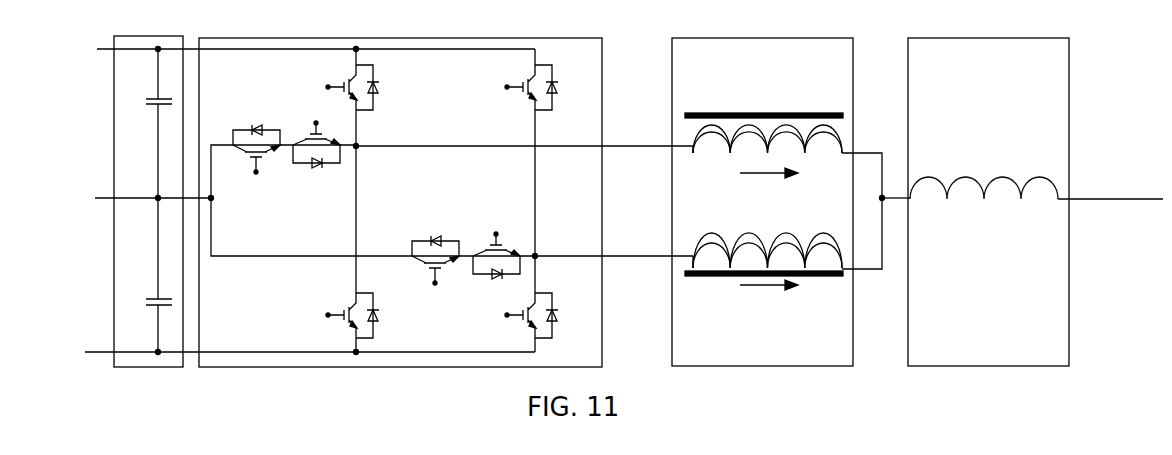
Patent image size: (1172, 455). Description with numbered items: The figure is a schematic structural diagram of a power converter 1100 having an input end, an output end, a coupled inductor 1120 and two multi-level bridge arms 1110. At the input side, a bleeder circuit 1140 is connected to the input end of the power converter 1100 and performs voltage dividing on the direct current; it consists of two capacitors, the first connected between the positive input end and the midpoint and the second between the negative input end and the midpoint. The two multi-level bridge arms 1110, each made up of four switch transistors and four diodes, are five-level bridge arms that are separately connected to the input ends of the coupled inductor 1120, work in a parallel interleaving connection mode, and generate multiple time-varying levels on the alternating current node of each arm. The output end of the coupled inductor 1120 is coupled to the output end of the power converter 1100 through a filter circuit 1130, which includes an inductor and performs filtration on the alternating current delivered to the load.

The power converter 1100 is at (592, 199).
The multi-level bridge arms 1110 is at (603, 75).
The coupled inductor 1120 is at (853, 70).
The filter circuit 1130 is at (1072, 78).
The bleeder circuit 1140 is at (112, 78).